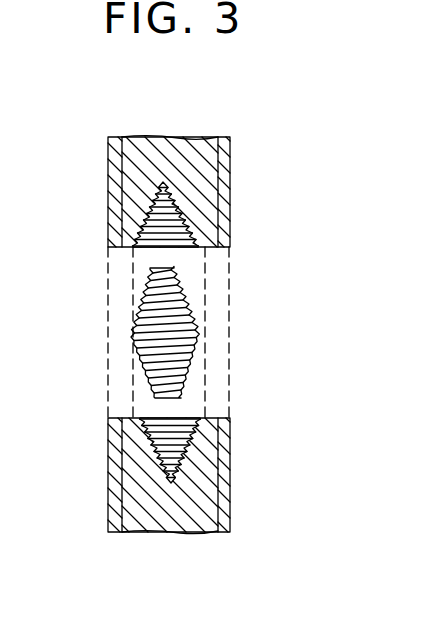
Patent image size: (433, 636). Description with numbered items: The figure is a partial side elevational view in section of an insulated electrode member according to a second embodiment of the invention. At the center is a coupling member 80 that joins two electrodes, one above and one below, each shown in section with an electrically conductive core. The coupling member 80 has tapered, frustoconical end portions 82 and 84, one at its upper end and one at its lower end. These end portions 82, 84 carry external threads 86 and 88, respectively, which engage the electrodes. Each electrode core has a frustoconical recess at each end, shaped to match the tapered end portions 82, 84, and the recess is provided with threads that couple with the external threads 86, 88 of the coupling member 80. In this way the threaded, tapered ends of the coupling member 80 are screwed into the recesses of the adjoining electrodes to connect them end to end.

The coupling member 80 is at (229, 334).
The tapered frustoconical end portion 82 is at (190, 284).
The tapered frustoconical end portion 84 is at (186, 384).
The external threads 86 is at (191, 301).
The external threads 88 is at (192, 366).